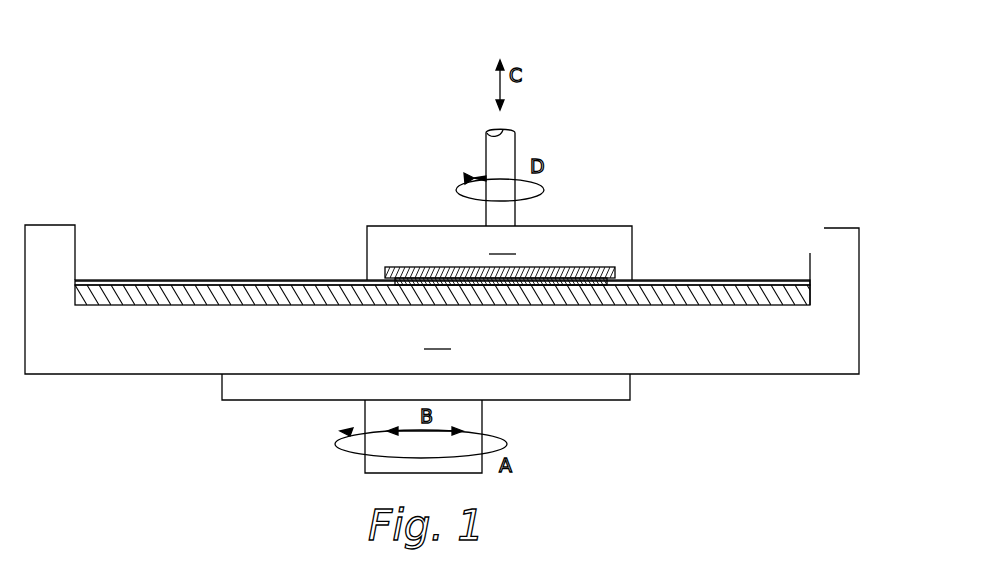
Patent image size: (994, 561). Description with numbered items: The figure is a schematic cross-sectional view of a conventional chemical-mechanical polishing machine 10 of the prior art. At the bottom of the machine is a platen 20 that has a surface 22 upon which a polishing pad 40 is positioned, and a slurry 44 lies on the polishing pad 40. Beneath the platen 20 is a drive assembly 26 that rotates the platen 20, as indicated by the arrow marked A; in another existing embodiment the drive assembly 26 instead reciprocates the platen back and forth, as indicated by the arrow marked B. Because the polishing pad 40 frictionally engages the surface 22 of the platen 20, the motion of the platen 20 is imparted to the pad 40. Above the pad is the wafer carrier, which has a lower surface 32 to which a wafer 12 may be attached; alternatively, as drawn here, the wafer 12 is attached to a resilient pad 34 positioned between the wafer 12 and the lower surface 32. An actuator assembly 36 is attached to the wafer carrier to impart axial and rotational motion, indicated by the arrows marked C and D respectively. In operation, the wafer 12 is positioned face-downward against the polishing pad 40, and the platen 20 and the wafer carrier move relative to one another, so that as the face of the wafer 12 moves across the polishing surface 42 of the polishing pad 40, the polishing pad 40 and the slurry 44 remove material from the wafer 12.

The CMP machine 10 is at (581, 51).
The wafer 12 is at (556, 279).
The platen 20 is at (470, 291).
The surface 22 is at (664, 288).
The drive assembly 26 is at (508, 416).
The lower surface 32 is at (400, 284).
The resilient pad 34 is at (446, 268).
The actuator assembly 36 is at (534, 136).
The polishing pad 40 is at (222, 298).
The polishing surface 42 is at (190, 281).
The slurry 44 is at (279, 281).